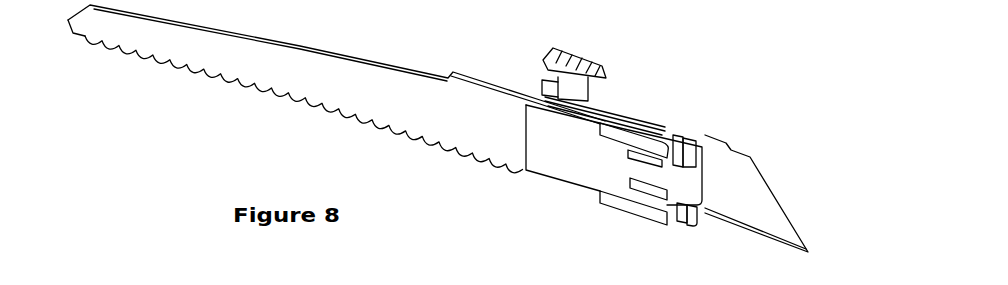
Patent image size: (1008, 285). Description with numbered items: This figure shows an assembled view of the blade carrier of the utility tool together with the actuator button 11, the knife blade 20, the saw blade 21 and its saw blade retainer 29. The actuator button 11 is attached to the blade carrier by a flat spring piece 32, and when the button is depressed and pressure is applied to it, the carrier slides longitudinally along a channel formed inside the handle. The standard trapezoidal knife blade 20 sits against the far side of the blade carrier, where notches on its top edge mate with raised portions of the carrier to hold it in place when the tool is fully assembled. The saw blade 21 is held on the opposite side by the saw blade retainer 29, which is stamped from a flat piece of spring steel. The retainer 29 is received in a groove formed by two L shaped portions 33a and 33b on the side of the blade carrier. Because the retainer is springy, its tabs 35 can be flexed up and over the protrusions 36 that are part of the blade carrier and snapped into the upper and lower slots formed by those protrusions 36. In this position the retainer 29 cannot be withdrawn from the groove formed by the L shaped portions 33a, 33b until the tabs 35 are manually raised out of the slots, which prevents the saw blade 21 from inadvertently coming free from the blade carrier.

The actuator button 11 is at (539, 46).
The knife blade 20 is at (739, 181).
The saw blade 21 is at (298, 91).
The saw blade retainer 29 is at (554, 169).
The flat spring piece 32 is at (616, 96).
The L shaped portion 33a is at (640, 115).
The L shaped portion 33b is at (596, 206).
The tabs 35 is at (691, 128).
The protrusions 36 is at (707, 139).